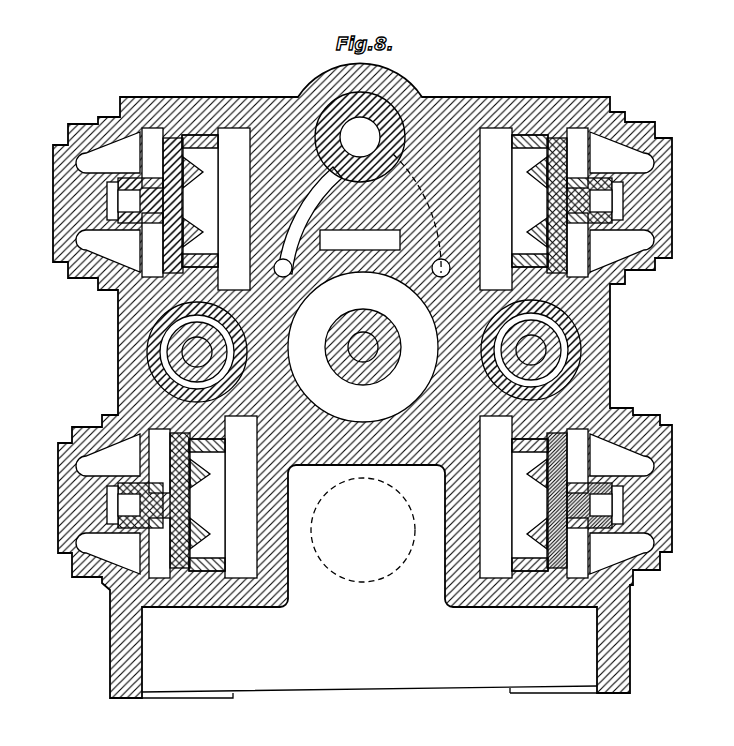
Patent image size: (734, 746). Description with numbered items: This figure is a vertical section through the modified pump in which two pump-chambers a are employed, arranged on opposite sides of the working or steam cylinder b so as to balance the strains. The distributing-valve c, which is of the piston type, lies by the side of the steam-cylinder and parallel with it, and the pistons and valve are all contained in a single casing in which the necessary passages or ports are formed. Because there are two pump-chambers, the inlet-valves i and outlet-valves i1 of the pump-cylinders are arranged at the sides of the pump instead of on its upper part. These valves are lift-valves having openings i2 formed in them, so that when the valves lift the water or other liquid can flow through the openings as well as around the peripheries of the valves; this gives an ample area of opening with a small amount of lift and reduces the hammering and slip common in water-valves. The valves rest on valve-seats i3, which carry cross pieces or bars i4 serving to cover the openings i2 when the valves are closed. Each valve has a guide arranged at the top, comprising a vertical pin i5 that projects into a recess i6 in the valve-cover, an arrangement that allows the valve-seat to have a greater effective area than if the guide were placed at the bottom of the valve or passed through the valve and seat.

The pump-cylinder a is at (185, 358).
The working or steam cylinder b is at (363, 347).
The distributing-valve c is at (360, 137).
The inlet-valve i is at (62, 201).
The outlet-valve i1 is at (77, 487).
The openings i2 is at (170, 170).
The valve-seats i3 is at (210, 135).
The cross pieces or bars i4 is at (190, 142).
The vertical pin i5 is at (122, 196).
The recess i6 is at (112, 205).